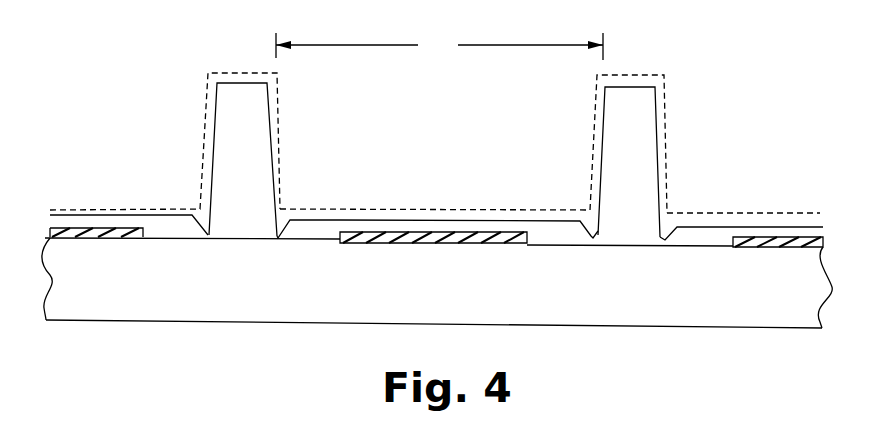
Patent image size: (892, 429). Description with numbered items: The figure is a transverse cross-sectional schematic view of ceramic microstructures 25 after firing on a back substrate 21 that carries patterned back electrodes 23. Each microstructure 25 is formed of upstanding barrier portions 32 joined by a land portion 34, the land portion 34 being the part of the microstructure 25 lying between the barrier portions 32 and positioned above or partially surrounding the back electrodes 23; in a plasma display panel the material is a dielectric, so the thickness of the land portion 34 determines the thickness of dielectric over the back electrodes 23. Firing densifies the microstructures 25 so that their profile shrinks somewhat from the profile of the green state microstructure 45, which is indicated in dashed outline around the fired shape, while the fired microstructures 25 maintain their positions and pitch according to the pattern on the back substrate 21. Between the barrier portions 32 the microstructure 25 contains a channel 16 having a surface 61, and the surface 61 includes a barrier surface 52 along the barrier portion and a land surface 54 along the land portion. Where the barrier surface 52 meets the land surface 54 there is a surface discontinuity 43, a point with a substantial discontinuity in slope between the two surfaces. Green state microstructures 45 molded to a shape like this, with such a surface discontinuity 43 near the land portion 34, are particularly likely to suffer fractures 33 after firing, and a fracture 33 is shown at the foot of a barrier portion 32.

The channel 16 is at (439, 46).
The back substrate 21 is at (525, 310).
The back electrodes 23 is at (378, 233).
The microstructure 25 is at (658, 123).
The barrier portion 32 is at (228, 133).
The fracture 33 is at (280, 228).
The land portion 34 is at (163, 228).
The surface discontinuity 43 is at (590, 212).
The green state microstructure 45 is at (668, 156).
The barrier surface 52 is at (597, 122).
The land surface 54 is at (503, 210).
The surface 61 is at (277, 113).